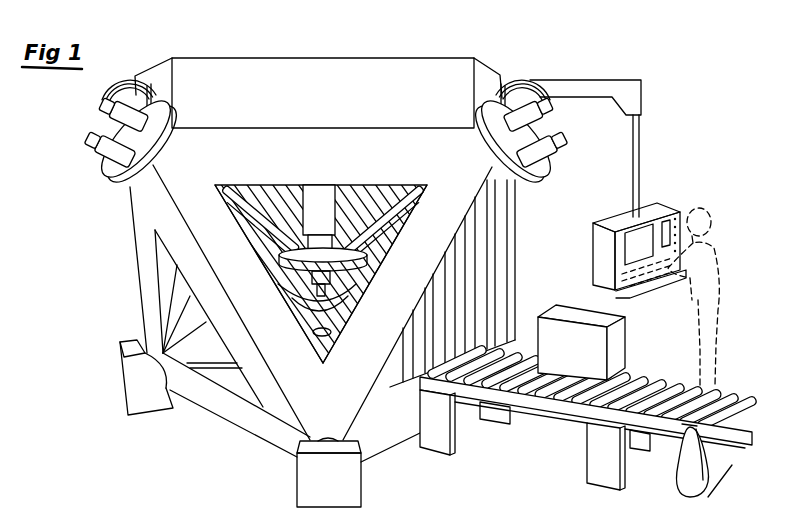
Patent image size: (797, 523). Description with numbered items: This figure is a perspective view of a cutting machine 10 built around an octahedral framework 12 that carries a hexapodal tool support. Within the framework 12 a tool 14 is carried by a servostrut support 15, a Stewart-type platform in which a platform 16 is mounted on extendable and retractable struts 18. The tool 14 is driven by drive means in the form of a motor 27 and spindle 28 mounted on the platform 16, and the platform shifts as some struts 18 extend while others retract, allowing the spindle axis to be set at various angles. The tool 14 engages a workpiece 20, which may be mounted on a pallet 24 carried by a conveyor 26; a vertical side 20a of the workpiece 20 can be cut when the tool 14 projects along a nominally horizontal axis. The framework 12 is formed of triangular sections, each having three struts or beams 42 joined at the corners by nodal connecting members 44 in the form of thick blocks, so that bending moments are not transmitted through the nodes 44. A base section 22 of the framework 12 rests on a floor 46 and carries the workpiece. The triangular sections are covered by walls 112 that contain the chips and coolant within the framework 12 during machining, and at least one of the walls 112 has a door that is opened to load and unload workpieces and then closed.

The cutting machine 10 is at (348, 52).
The framework 12 is at (131, 266).
The tool 14 is at (345, 287).
The servostrut support 15 is at (386, 200).
The platform 16 is at (283, 262).
The struts 18 is at (250, 207).
The workpiece 20 is at (577, 363).
The vertical side of the workpiece 20a is at (588, 358).
The base section 22 is at (237, 428).
The pallet 24 is at (633, 377).
The conveyor 26 is at (746, 398).
The motor 27 is at (327, 193).
The spindle 28 is at (300, 283).
The struts or beams 42 is at (263, 344).
The nodal connecting members 44 is at (315, 481).
The floor 46 is at (427, 483).
The walls 112 is at (492, 258).